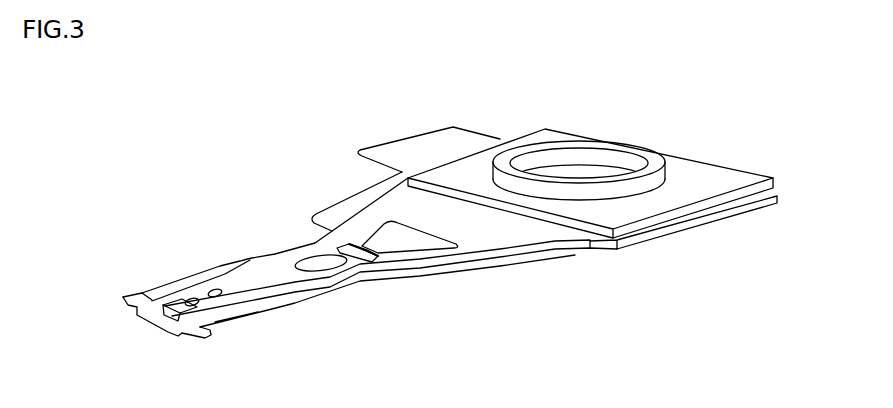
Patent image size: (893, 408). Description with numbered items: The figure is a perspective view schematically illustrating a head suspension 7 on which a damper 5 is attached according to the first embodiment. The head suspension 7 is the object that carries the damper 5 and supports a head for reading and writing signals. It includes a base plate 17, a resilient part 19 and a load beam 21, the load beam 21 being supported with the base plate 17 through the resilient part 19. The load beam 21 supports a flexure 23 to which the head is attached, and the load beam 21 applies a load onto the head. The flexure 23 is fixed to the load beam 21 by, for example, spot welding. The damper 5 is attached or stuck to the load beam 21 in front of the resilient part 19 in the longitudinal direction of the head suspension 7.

The head suspension 7 is at (542, 90).
The base plate 17 is at (727, 176).
The resilient part 19 is at (442, 263).
The load beam 21 is at (265, 272).
The damper 5 is at (362, 258).
The flexure 23 is at (123, 296).